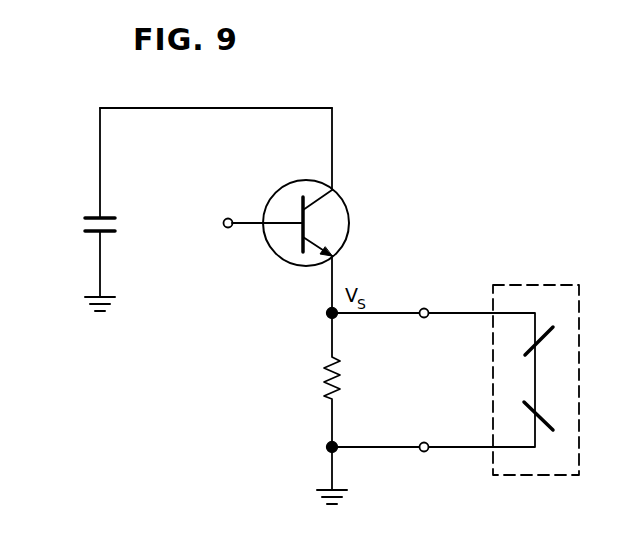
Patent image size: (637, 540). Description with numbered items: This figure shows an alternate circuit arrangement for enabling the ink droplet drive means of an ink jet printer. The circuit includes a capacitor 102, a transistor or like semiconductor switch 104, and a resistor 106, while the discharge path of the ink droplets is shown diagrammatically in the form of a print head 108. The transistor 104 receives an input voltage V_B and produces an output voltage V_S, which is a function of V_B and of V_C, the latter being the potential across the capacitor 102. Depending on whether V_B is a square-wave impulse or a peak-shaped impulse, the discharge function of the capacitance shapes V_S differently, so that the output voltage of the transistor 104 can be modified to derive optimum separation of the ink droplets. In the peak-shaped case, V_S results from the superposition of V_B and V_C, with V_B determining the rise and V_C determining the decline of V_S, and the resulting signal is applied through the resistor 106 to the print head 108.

The capacitor 102 is at (100, 218).
The transistor 104 is at (280, 187).
The resistor 106 is at (328, 375).
The print head 108 is at (522, 285).